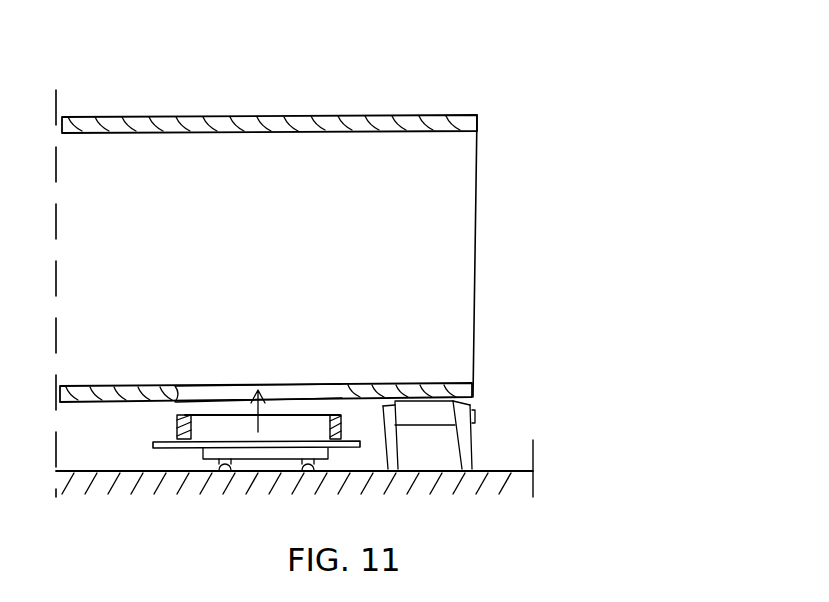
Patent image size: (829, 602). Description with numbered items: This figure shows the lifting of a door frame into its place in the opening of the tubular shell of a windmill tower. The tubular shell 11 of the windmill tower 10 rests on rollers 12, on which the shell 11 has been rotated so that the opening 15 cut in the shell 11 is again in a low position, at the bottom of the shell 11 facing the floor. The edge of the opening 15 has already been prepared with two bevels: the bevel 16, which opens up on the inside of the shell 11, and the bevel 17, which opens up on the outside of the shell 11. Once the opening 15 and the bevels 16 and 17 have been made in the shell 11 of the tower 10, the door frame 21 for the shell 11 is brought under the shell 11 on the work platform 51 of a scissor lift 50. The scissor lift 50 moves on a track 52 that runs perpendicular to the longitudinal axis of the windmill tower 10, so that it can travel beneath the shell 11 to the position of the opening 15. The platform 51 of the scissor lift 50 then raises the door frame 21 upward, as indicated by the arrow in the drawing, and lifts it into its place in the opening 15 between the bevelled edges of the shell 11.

The windmill tower 10 is at (268, 100).
The tubular shell 11 is at (357, 116).
The rollers 12 is at (420, 410).
The opening 15 is at (217, 388).
The bevel 16 is at (175, 386).
The bevel 17 is at (175, 403).
The door frame 21 is at (330, 427).
The scissor lift 50 is at (200, 459).
The work platform 51 is at (152, 447).
The track 52 is at (228, 472).